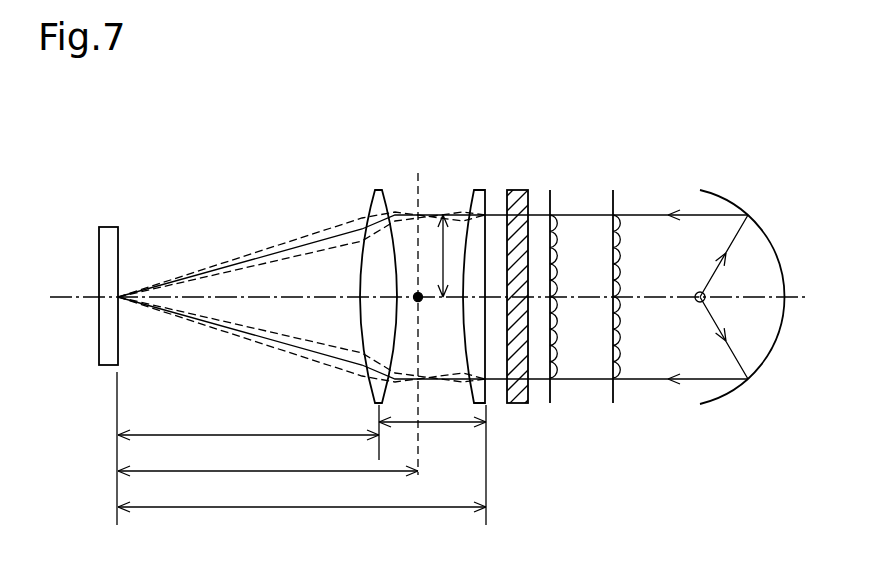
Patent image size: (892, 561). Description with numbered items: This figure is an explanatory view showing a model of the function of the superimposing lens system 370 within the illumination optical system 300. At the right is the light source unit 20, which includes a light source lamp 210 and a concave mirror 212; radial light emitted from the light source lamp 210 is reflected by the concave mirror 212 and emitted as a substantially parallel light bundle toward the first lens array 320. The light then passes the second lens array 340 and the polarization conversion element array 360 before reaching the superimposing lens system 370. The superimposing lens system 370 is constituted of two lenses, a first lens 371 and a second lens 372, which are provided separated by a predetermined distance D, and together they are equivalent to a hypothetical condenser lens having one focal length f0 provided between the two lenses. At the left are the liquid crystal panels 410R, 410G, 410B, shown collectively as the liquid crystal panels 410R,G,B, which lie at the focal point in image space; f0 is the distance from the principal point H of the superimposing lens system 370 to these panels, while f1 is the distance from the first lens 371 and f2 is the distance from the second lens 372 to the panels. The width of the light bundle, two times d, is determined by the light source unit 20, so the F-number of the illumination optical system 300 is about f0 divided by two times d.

The illumination optical system 300 is at (669, 71).
The liquid crystal panels 410R,G,B is at (109, 254).
The liquid crystal panel 410R is at (109, 254).
The liquid crystal panel 410G is at (109, 254).
The liquid crystal panel 410B is at (110, 226).
The superimposing lens system 370 is at (485, 123).
The second lens 372 is at (378, 188).
The first lens 371 is at (480, 188).
The polarization conversion element array 360 is at (517, 188).
The second lens array 340 is at (552, 196).
The first lens array 320 is at (616, 196).
The light source unit 20 is at (732, 168).
The concave mirror 212 is at (768, 233).
The light source lamp 210 is at (697, 305).